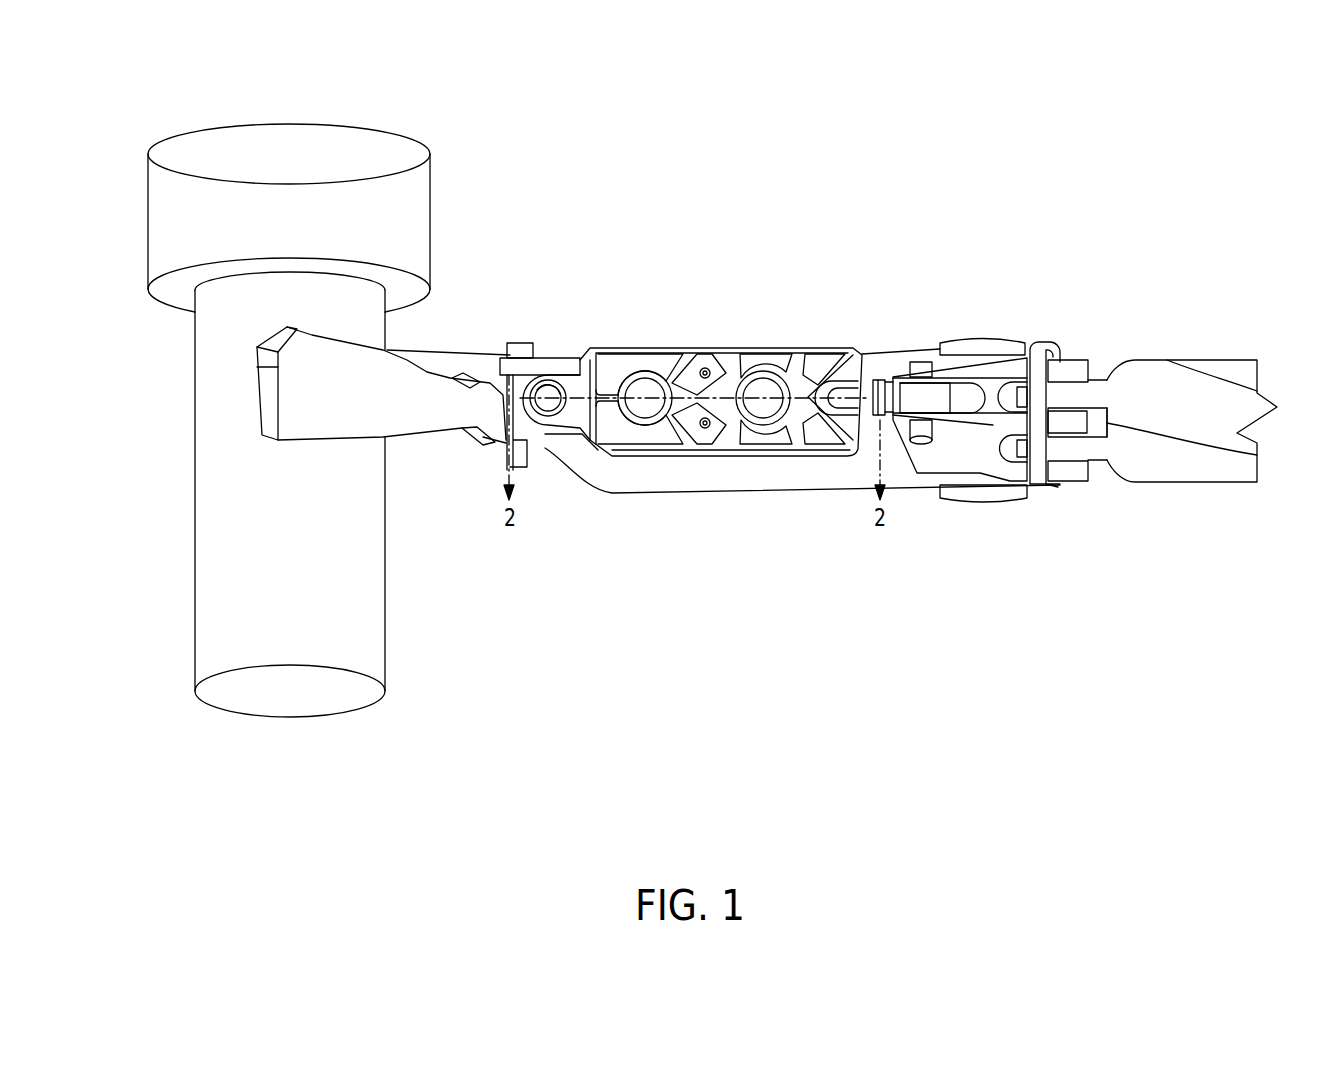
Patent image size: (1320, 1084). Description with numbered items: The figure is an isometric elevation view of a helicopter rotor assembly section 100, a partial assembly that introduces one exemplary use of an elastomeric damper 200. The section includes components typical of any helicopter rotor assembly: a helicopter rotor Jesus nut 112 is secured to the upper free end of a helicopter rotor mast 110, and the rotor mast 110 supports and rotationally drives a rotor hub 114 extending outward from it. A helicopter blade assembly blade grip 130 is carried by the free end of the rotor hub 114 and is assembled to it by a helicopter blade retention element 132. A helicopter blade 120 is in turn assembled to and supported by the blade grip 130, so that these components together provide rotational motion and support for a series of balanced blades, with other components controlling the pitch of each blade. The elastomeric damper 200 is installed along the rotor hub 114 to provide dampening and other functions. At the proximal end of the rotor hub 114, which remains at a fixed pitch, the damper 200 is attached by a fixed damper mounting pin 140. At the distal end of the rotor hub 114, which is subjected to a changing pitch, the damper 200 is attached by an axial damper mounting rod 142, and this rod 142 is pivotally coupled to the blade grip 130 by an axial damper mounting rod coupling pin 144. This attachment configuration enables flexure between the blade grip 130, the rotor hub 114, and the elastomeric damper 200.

The helicopter rotor assembly section 100 is at (1066, 180).
The helicopter rotor mast 110 is at (330, 565).
The helicopter rotor Jesus nut 112 is at (353, 200).
The rotor hub 114 is at (717, 470).
The helicopter blade 120 is at (1190, 360).
The helicopter blade assembly blade grip 130 is at (972, 450).
The helicopter blade retention element 132 is at (983, 340).
The fixed damper mounting pin 140 is at (542, 400).
The axial damper mounting rod 142 is at (885, 380).
The axial damper mounting rod coupling pin 144 is at (923, 444).
The elastomeric damper 200 is at (722, 348).